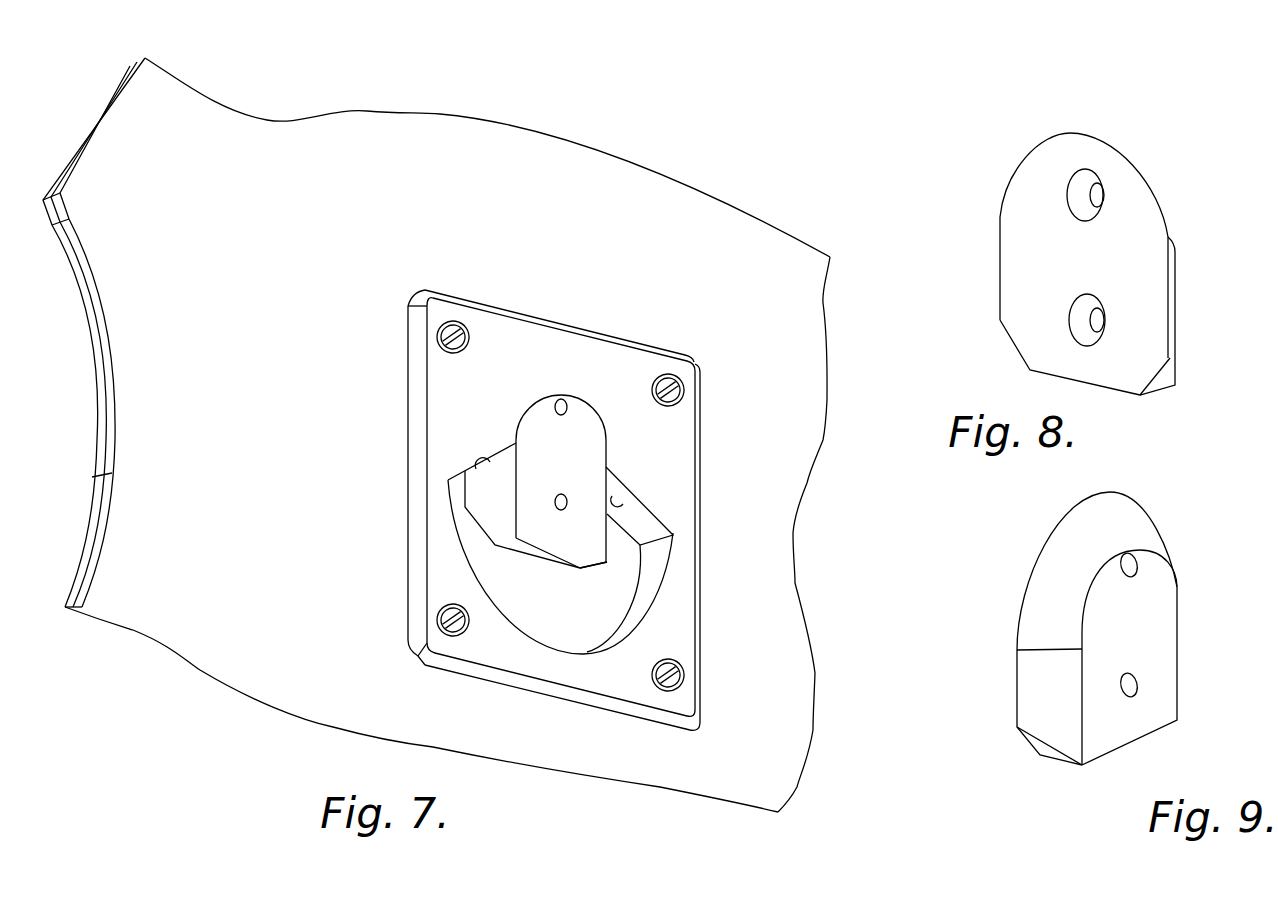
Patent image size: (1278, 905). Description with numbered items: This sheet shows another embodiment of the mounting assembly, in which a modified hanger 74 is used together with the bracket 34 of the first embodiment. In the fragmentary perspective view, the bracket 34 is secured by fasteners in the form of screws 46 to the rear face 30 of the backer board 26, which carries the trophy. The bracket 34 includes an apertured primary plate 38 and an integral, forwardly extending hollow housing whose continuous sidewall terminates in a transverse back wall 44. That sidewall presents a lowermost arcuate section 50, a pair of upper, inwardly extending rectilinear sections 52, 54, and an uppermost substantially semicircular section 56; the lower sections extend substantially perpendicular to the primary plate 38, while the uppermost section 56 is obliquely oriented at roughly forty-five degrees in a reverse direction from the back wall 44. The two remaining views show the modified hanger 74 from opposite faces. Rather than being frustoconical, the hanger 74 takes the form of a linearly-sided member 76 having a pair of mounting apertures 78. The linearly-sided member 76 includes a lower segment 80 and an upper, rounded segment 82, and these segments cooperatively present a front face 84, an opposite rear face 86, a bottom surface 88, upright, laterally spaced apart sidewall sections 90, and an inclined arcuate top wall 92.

In FIG. 7, the backer board 26 is at (700, 185).
In FIG. 7, the rear face 30 is at (788, 518).
In FIG. 7, the bracket 34 is at (582, 510).
In FIG. 7, the primary plate 38 is at (686, 431).
In FIG. 7, the back wall 44 is at (615, 578).
In FIG. 7, the screws 46 is at (445, 333).
In FIG. 7, the lowermost arcuate section 50 is at (663, 598).
In FIG. 7, the rectilinear section 52 is at (479, 465).
In FIG. 7, the rectilinear section 54 is at (621, 497).
In FIG. 7, the uppermost semicircular section 56 is at (572, 400).
In FIG. 7, the modified hanger 74 is at (557, 510).
In FIG. 8, the modified hanger 74 is at (1083, 258).
In FIG. 9, the modified hanger 74 is at (1091, 627).
In FIG. 8, the linearly-sided member 76 is at (1178, 214).
In FIG. 9, the linearly-sided member 76 is at (1038, 631).
In FIG. 8, the mounting apertures 78 is at (1098, 194).
In FIG. 9, the mounting apertures 78 is at (1131, 564).
In FIG. 9, the lower segment 80 is at (1157, 645).
In FIG. 9, the upper rounded segment 82 is at (1152, 585).
In FIG. 8, the front face 84 is at (1013, 238).
In FIG. 9, the rear face 86 is at (1170, 703).
In FIG. 9, the bottom surface 88 is at (1125, 748).
In FIG. 8, the sidewall sections 90 is at (1176, 294).
In FIG. 9, the sidewall sections 90 is at (1048, 705).
In FIG. 9, the inclined arcuate top wall 92 is at (1127, 508).